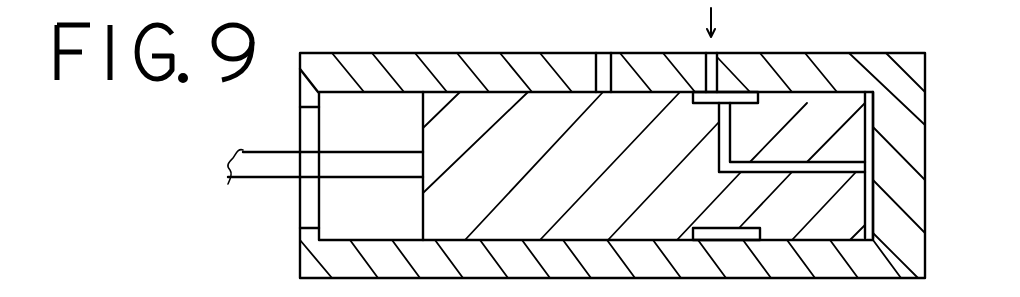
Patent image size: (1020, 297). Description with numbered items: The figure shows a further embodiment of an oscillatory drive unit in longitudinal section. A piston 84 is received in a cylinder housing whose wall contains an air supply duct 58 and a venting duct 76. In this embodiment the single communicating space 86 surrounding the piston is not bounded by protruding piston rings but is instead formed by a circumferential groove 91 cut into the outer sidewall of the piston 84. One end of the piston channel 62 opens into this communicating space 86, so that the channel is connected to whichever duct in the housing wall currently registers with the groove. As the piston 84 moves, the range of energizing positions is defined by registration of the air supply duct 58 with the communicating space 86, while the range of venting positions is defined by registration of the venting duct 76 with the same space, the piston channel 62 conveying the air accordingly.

The venting duct 76 is at (605, 63).
The air supply duct 58 is at (712, 75).
The circumferential groove 91 is at (700, 95).
The single communicating space 86 is at (753, 95).
The piston channel 62 is at (712, 145).
The piston 84 is at (427, 189).